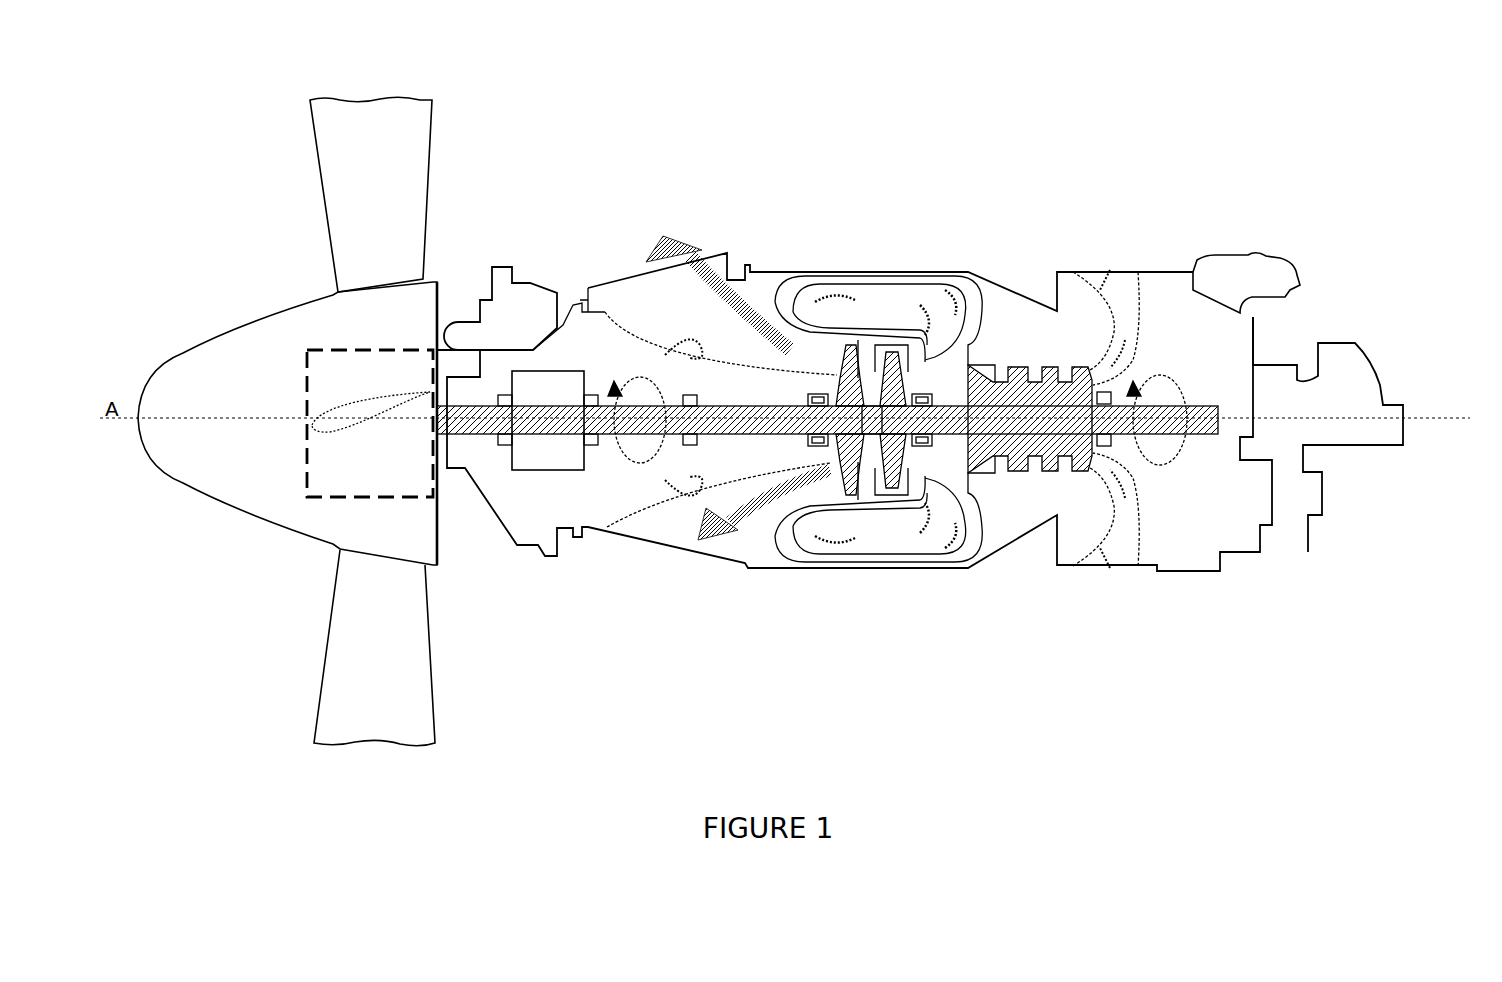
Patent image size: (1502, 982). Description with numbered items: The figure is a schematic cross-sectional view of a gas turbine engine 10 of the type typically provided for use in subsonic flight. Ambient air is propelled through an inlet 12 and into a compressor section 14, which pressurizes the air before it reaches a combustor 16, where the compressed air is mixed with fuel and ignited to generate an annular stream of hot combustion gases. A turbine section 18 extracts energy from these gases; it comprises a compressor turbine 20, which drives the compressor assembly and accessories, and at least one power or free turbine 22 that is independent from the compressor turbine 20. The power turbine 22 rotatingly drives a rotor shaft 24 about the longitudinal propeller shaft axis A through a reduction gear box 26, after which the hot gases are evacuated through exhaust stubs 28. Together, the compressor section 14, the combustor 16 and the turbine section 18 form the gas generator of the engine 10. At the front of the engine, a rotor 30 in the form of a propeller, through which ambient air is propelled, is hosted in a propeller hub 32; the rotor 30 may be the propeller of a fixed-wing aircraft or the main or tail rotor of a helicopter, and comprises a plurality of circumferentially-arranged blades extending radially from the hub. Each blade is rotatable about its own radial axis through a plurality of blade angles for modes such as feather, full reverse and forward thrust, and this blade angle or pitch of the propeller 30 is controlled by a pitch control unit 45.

The gas turbine engine 10 is at (787, 172).
The inlet 12 is at (1124, 249).
The compressor section 14 is at (1008, 312).
The combustor 16 is at (902, 305).
The turbine section 18 is at (870, 428).
The compressor turbine 20 is at (905, 437).
The power turbine 22 is at (830, 437).
The rotor shaft 24 is at (567, 462).
The reduction gear box 26 is at (547, 428).
The exhaust stubs 28 is at (636, 248).
The rotor 30 is at (342, 170).
The propeller hub 32 is at (265, 335).
The pitch control unit 45 is at (307, 490).